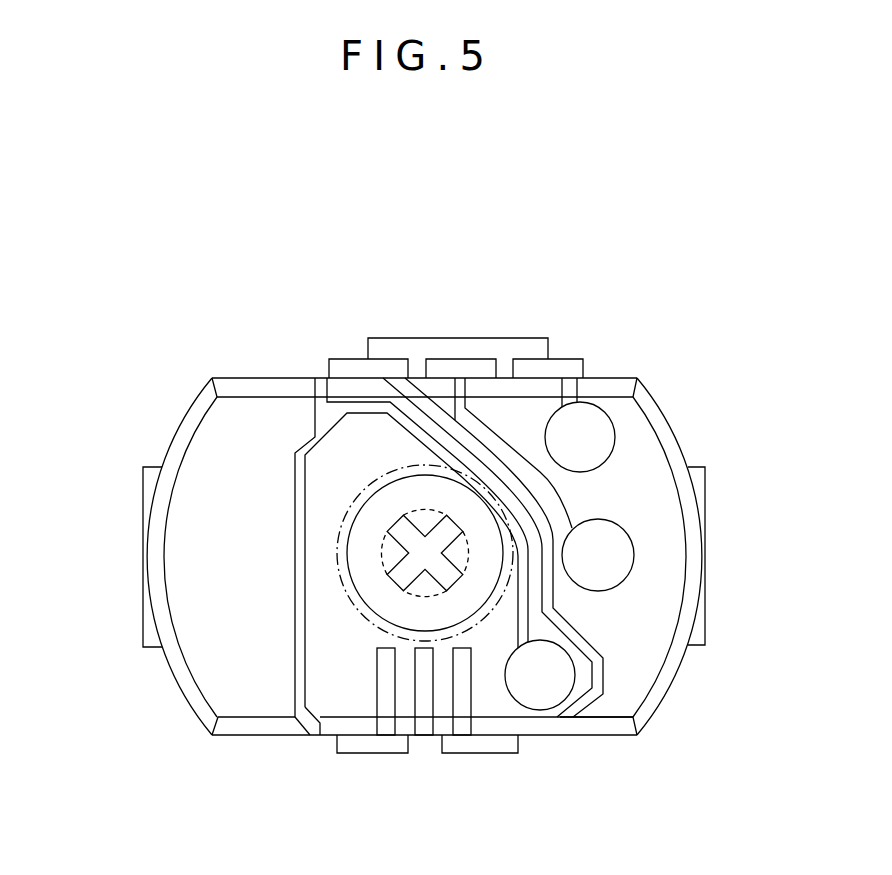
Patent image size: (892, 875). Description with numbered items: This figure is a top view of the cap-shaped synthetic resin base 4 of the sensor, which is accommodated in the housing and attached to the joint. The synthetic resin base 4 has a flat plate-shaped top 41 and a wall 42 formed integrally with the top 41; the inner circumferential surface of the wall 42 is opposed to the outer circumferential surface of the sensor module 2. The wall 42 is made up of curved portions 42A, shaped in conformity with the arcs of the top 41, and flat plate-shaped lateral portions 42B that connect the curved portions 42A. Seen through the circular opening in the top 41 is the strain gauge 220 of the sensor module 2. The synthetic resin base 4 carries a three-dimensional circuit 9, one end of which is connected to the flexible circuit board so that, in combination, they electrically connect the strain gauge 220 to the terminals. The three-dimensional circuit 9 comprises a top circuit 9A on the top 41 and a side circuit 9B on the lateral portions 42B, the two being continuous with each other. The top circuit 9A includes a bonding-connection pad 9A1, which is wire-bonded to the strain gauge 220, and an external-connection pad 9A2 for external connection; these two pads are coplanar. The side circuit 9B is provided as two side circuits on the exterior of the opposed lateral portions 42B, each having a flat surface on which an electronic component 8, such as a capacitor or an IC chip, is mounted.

The synthetic resin base 4 is at (648, 262).
The top 41 is at (248, 423).
The wall 42 is at (700, 745).
The curved portions 42A is at (167, 668).
The lateral portions 42B is at (620, 727).
The electronic component 8 is at (345, 363).
The three-dimensional circuit 9 is at (741, 342).
The top circuit 9A is at (640, 432).
The bonding-connection pad 9A1 is at (454, 690).
The external-connection pad 9A2 is at (596, 449).
The side circuit 9B is at (585, 363).
The sensor module 2 is at (360, 551).
The strain gauge 220 is at (410, 515).